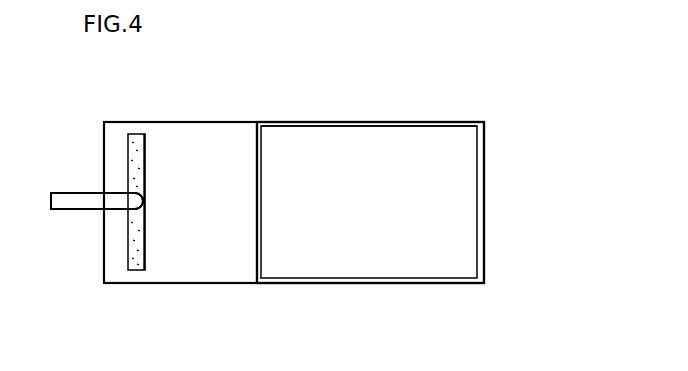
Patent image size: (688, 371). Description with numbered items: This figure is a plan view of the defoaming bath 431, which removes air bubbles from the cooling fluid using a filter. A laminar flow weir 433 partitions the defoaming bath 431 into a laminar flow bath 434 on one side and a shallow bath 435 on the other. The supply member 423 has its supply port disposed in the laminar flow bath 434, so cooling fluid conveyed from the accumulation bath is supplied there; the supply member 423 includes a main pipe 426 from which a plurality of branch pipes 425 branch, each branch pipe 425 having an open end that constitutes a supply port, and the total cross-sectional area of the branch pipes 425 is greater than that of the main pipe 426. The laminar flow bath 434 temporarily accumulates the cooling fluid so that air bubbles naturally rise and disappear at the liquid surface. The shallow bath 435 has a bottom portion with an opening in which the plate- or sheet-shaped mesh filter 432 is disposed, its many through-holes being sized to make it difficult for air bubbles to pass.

The supply member 423 is at (73, 186).
The branch pipes 425 is at (145, 141).
The main pipe 426 is at (66, 203).
The defoaming bath 431 is at (291, 116).
The filter 432 is at (341, 272).
The laminar flow weir 433 is at (255, 271).
The laminar flow bath 434 is at (231, 120).
The shallow bath 435 is at (344, 126).